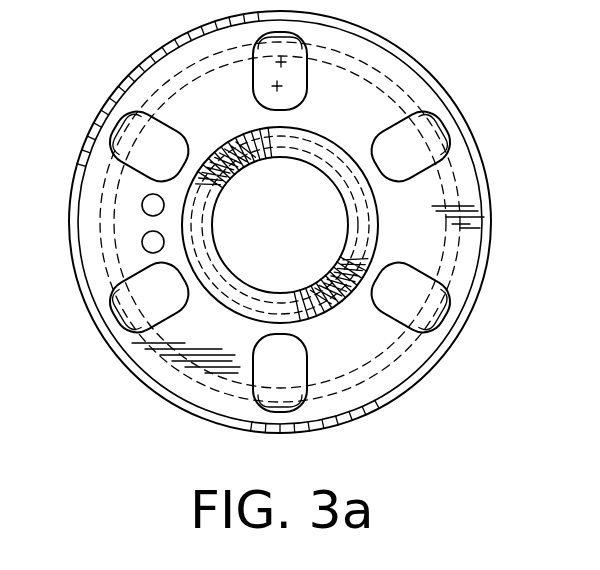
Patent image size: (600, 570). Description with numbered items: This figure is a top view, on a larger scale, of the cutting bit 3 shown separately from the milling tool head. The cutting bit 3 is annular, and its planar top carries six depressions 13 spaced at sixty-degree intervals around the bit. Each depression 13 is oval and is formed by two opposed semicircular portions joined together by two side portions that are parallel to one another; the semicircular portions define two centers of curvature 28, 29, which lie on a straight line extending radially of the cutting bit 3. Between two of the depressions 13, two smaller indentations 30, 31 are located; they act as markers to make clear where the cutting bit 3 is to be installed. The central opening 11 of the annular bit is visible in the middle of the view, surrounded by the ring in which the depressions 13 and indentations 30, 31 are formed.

The cutting bit 3 is at (471, 119).
The central opening 11 is at (296, 241).
The depression 13 is at (128, 124).
The center of curvature 28 is at (283, 64).
The center of curvature 29 is at (276, 88).
The indentation 30 is at (142, 203).
The indentation 31 is at (142, 246).